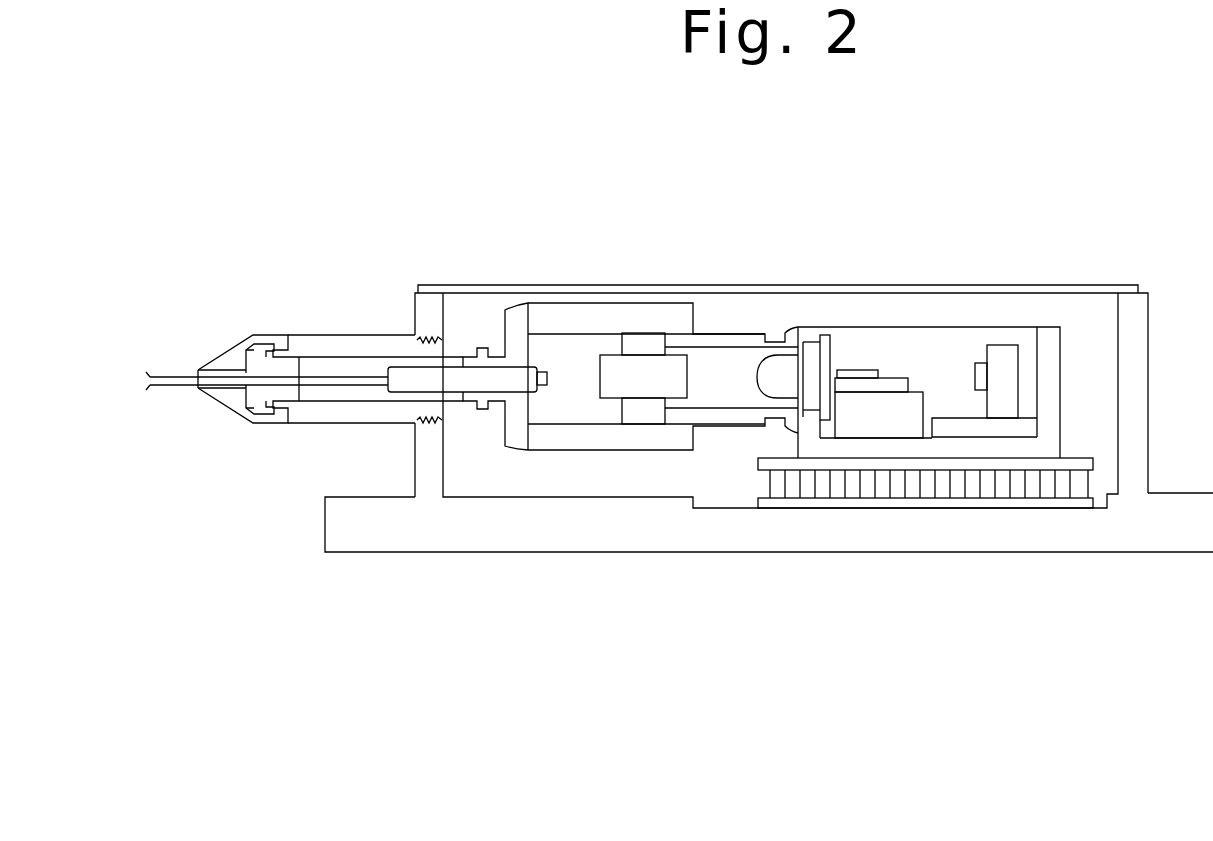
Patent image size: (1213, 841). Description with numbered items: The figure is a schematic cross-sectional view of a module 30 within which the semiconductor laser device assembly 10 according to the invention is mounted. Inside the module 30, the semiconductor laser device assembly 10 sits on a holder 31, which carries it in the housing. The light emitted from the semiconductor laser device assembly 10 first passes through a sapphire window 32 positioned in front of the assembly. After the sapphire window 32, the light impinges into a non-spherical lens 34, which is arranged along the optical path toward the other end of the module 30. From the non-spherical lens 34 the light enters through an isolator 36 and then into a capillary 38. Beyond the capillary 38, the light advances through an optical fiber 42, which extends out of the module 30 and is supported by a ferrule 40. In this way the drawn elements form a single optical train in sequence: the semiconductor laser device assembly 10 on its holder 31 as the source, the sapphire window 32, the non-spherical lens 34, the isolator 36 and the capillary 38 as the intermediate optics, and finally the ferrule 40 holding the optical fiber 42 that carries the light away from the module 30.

The module 30 is at (605, 214).
The optical fiber 42 is at (290, 372).
The ferrule 40 is at (457, 366).
The capillary 38 is at (547, 372).
The isolator 36 is at (610, 355).
The non-spherical lens 34 is at (760, 352).
The sapphire window 32 is at (838, 342).
The semiconductor laser device assembly 10 is at (900, 377).
The holder 31 is at (927, 407).